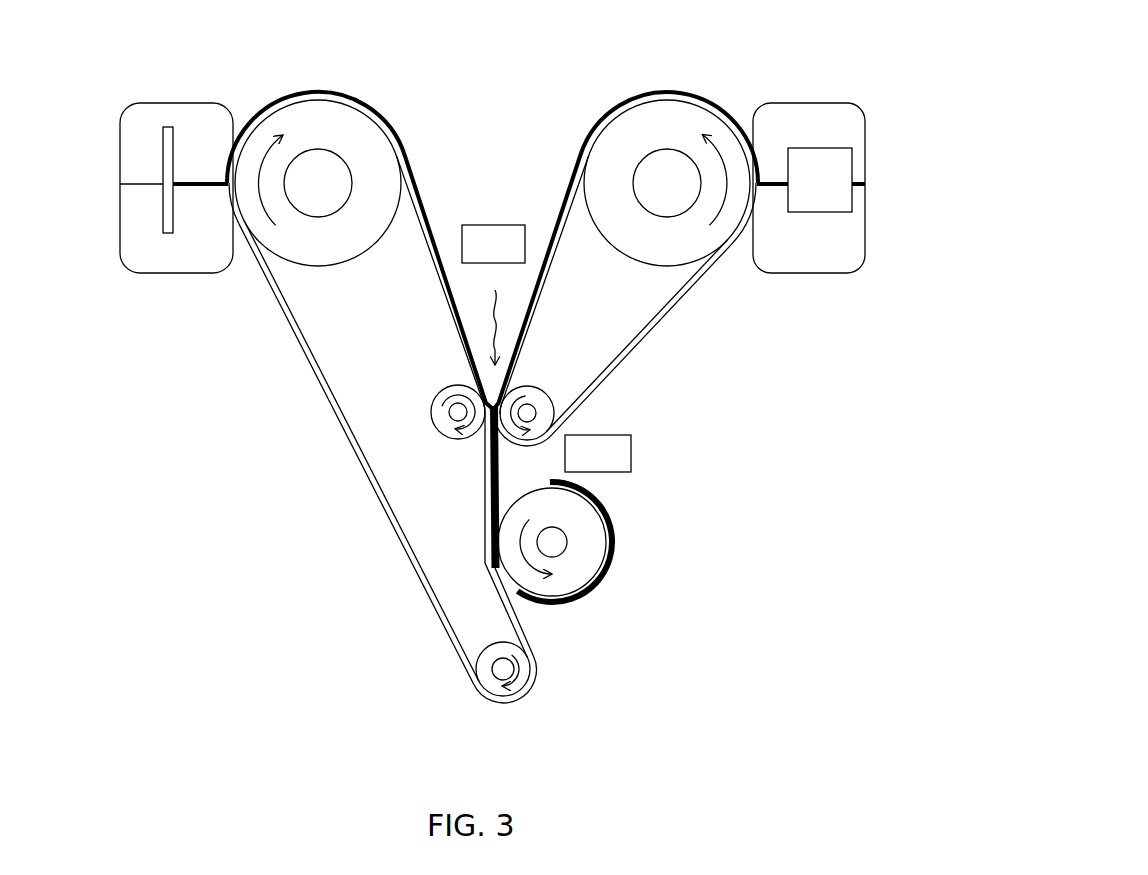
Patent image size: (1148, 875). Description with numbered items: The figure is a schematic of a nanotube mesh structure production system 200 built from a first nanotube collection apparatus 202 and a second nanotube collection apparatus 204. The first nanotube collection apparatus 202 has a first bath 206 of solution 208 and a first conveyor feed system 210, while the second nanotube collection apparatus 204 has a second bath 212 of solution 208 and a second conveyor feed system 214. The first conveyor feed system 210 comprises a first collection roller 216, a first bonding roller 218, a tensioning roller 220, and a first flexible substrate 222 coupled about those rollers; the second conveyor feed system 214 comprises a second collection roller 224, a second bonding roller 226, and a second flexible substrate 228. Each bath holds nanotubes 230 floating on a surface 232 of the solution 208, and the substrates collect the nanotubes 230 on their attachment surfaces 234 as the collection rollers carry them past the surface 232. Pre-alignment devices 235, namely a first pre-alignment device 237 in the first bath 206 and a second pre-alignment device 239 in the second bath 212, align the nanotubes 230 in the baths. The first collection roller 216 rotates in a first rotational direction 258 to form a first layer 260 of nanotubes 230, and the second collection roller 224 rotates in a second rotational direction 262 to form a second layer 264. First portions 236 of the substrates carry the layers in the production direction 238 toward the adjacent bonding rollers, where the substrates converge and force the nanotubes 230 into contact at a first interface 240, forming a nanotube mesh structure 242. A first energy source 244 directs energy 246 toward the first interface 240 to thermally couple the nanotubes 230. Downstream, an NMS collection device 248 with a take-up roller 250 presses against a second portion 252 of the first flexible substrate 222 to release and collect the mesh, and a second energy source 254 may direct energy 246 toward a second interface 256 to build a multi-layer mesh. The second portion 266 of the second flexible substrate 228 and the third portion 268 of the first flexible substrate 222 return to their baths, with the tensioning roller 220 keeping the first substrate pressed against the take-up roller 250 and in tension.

The nanotube mesh structure production system 200 is at (262, 38).
The first nanotube collection apparatus 202 is at (240, 63).
The second nanotube collection apparatus 204 is at (745, 85).
The first bath 206 is at (130, 107).
The solution 208 is at (162, 230).
The first conveyor feed system 210 is at (443, 65).
The second bath 212 is at (863, 113).
The second conveyor feed system 214 is at (610, 83).
The first collection roller 216 is at (318, 113).
The first bonding roller 218 is at (442, 427).
The tensioning roller 220 is at (483, 673).
The first flexible substrate 222 is at (298, 322).
The second collection roller 224 is at (654, 113).
The second bonding roller 226 is at (548, 415).
The second flexible substrate 228 is at (677, 310).
The nanotubes 230 is at (207, 182).
The surface 232 is at (131, 183).
The attachment surface 234 is at (232, 203).
The pre-alignment devices 235 is at (158, 117).
The first portions 236 is at (420, 252).
The first pre-alignment device 237 is at (170, 125).
The direction 238 is at (547, 188).
The second pre-alignment device 239 is at (851, 150).
The first interface 240 is at (502, 383).
The nanotube mesh structure 242 is at (557, 460).
The first energy source 244 is at (493, 225).
The energy 246 is at (487, 325).
The NMS collection device 248 is at (625, 528).
The take-up roller 250 is at (587, 547).
The second portion 252 is at (473, 550).
The second energy source 254 is at (631, 455).
The second interface 256 is at (490, 470).
The first rotational direction 258 is at (287, 136).
The first layer 260 is at (389, 117).
The second rotational direction 262 is at (702, 140).
The second layer 264 is at (608, 115).
The second portion 266 is at (625, 335).
The third portion 268 is at (333, 367).